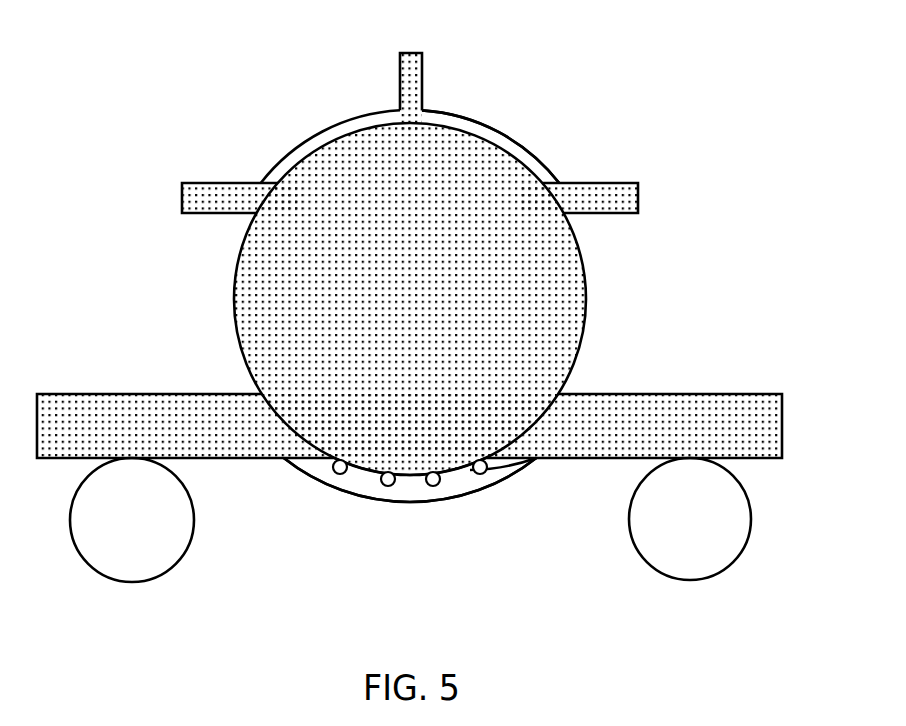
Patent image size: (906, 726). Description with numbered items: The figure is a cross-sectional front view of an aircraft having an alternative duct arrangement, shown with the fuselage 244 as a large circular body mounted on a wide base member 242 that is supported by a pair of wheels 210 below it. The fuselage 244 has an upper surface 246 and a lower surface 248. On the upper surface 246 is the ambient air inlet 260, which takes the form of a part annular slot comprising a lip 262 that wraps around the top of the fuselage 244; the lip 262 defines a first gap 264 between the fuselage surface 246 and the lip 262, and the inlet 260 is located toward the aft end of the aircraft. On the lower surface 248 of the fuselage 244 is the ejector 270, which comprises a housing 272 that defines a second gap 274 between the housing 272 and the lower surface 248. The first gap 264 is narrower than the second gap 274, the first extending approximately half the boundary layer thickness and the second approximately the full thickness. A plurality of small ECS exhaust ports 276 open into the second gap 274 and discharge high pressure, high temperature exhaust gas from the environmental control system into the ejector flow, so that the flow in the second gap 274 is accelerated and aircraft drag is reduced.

The wheel 210 is at (688, 580).
The base plate 242 is at (688, 393).
The fuselage 244 is at (588, 298).
The upper surface 246 is at (327, 143).
The lower surface 248 is at (332, 458).
The ambient air inlet 260 is at (512, 139).
The lip 262 is at (468, 120).
The first gap 264 is at (542, 164).
The ejector 270 is at (452, 515).
The housing 272 is at (397, 503).
The second gap 274 is at (497, 475).
The sensor element 276 is at (388, 487).